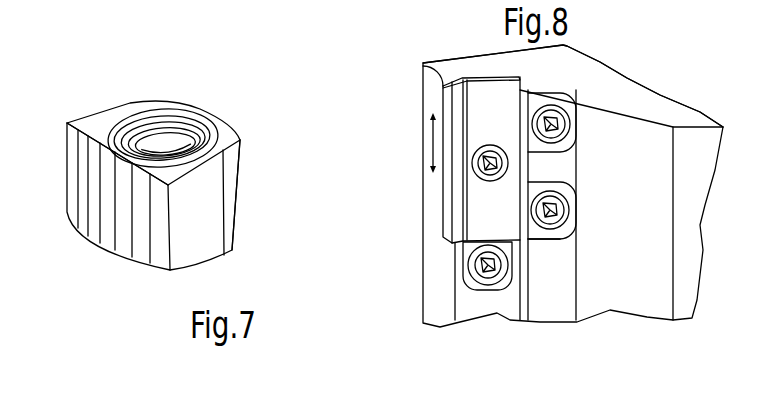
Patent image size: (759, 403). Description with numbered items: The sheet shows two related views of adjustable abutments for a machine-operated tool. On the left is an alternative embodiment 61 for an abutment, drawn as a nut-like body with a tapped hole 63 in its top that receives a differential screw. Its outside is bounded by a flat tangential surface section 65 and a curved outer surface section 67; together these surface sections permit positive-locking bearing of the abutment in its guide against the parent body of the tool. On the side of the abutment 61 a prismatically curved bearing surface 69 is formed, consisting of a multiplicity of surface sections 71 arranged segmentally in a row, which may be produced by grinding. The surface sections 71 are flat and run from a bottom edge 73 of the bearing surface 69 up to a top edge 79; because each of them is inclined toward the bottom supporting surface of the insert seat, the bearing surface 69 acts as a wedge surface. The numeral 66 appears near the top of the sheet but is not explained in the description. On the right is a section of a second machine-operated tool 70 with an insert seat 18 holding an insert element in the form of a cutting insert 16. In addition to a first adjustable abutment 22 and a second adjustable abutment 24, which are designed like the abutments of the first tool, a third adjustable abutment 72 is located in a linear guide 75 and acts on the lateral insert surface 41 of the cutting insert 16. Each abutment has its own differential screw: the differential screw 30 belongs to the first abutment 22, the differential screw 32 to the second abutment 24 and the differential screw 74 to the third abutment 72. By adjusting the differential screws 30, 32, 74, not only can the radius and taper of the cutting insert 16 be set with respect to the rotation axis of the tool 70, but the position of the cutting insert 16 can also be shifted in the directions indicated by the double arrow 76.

In FIG. 7, the top edge 79 is at (110, 155).
In FIG. 7, the tapped hole 63 is at (168, 135).
In FIG. 7, the flat tangential surface section 65 is at (192, 257).
In FIG. 7, the curved outer surface section 67 is at (222, 199).
In FIG. 7, the prismatically curved bearing surface 69 is at (113, 192).
In FIG. 7, the surface sections 71 is at (165, 260).
In FIG. 7, the bottom edge 73 is at (127, 240).
In FIG. 8, the alternative embodiment for an abutment 61 is at (257, 113).
In FIG. 8, the tool holder 66 is at (388, 5).
In FIG. 8, the second machine-operated tool 70 is at (403, 170).
In FIG. 8, the insert seat 18 is at (476, 76).
In FIG. 8, the cutting insert 16 is at (485, 207).
In FIG. 8, the double arrow 76 is at (431, 136).
In FIG. 8, the first adjustable abutment 22 is at (567, 103).
In FIG. 8, the differential screw 30 is at (573, 136).
In FIG. 8, the differential screw 32 is at (575, 200).
In FIG. 8, the second adjustable abutment 24 is at (535, 232).
In FIG. 8, the lateral insert surface 41 is at (468, 248).
In FIG. 8, the third adjustable abutment 72 is at (470, 272).
In FIG. 8, the linear guide 75 is at (477, 289).
In FIG. 8, the differential screw 74 is at (483, 281).